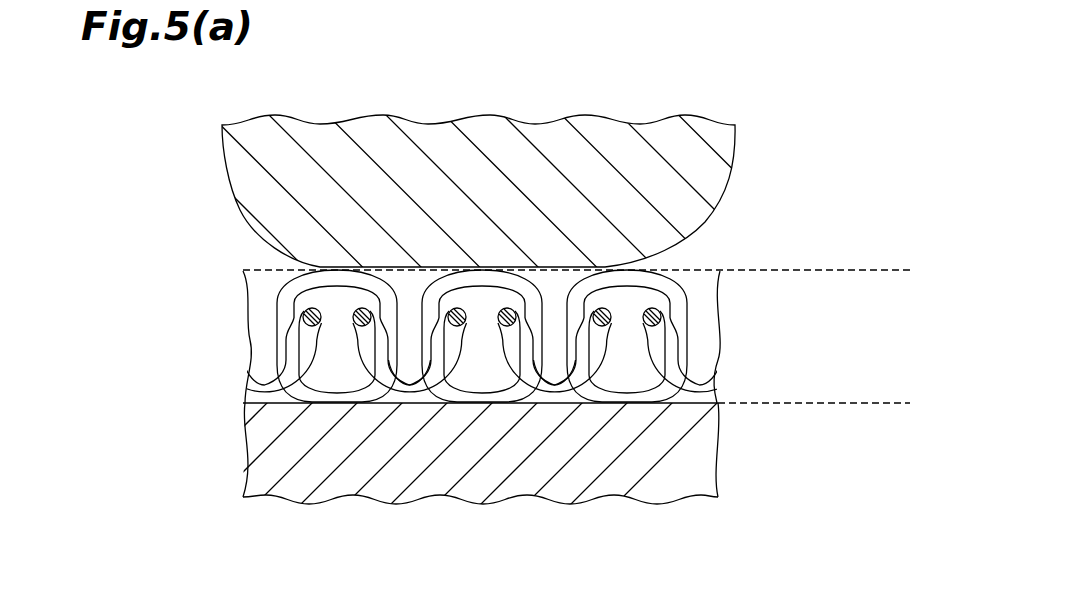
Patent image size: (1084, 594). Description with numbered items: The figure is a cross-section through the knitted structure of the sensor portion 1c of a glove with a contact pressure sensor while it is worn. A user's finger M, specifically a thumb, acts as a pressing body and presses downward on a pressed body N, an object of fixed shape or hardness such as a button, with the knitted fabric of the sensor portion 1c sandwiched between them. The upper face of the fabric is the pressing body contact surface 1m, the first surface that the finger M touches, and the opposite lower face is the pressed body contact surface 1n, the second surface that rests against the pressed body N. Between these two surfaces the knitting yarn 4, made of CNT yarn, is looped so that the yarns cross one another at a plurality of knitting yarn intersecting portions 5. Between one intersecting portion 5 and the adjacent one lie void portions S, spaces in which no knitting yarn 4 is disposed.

The finger M is at (690, 202).
The pressed body N is at (700, 455).
The pressing body contact surface 1m is at (852, 268).
The pressed body contact surface 1n is at (852, 404).
The sensor portion 1c is at (258, 342).
The knitting yarn 4 is at (279, 297).
The knitting yarn intersecting portion 5 is at (700, 354).
The void portion S is at (411, 361).